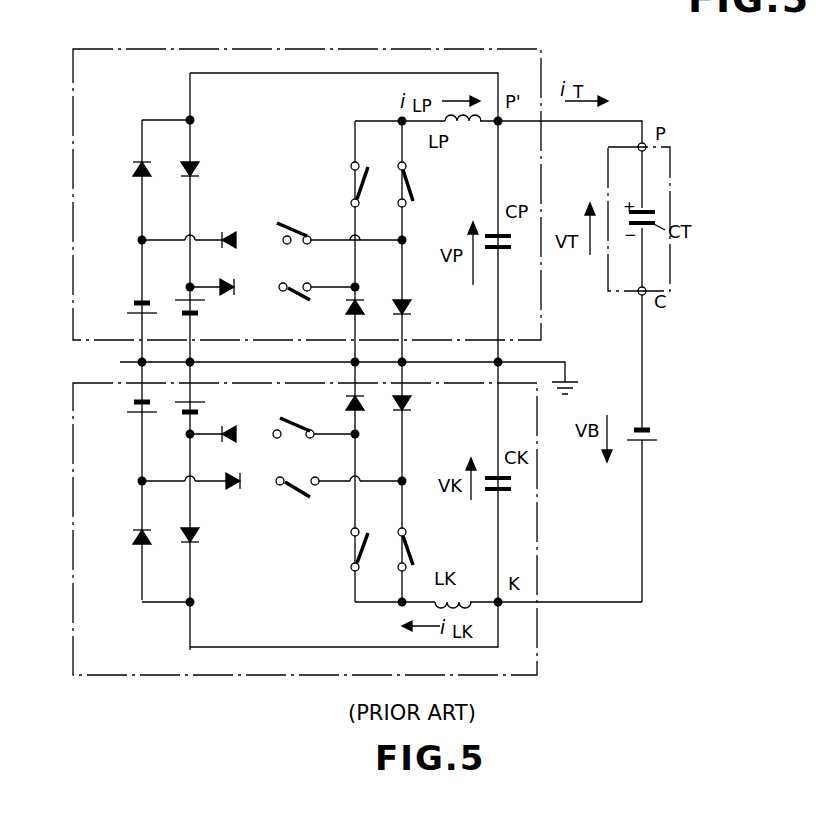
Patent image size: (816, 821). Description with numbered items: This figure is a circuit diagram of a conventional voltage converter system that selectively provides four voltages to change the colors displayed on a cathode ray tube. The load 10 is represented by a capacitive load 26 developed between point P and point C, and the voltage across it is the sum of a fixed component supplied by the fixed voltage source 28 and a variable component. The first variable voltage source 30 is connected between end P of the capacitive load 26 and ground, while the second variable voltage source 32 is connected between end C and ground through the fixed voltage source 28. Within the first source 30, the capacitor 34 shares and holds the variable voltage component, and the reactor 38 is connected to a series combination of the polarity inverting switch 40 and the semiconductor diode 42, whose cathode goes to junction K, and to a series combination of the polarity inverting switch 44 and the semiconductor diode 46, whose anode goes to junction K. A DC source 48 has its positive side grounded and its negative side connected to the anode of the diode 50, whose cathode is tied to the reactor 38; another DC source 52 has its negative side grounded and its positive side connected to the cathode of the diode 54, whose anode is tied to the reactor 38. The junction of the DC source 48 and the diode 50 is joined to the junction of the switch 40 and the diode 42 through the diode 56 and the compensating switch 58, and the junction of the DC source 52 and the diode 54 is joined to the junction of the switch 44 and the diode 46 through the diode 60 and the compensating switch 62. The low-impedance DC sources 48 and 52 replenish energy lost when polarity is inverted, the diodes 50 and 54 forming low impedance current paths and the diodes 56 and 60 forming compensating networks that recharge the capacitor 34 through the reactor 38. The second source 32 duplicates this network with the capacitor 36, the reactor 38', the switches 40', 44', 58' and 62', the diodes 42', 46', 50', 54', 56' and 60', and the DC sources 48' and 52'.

The load 10 is at (670, 172).
The capacitive load 26 is at (652, 208).
The fixed voltage source 28 is at (655, 437).
The first variable voltage source 30 is at (308, 48).
The second variable voltage source 32 is at (308, 676).
The capacitor 34 is at (508, 250).
The capacitor 36 is at (508, 492).
The reactor 38 is at (466, 144).
The reactor 38' is at (462, 577).
The polarity inverting switch 40 is at (420, 184).
The polarity inverting switch 40' is at (424, 549).
The semiconductor diode 42 is at (420, 301).
The semiconductor diode 42' is at (420, 416).
The polarity inverting switch 44 is at (343, 184).
The polarity inverting switch 44' is at (339, 549).
The semiconductor diode 46 is at (365, 295).
The semiconductor diode 46' is at (368, 417).
The DC source 48 is at (122, 306).
The DC source 48' is at (201, 398).
The semiconductor diode 50 is at (121, 183).
The semiconductor diode 50' is at (209, 522).
The DC source 52 is at (199, 307).
The DC source 52' is at (121, 411).
The semiconductor diode 54 is at (202, 183).
The semiconductor diode 54' is at (121, 523).
The semiconductor diode 56 is at (246, 226).
The semiconductor diode 56' is at (248, 417).
The compensating switch 58 is at (301, 225).
The compensating switch 58' is at (300, 415).
The semiconductor diode 60 is at (245, 275).
The semiconductor diode 60' is at (250, 468).
The compensating switch 62 is at (301, 278).
The compensating switch 62' is at (302, 472).